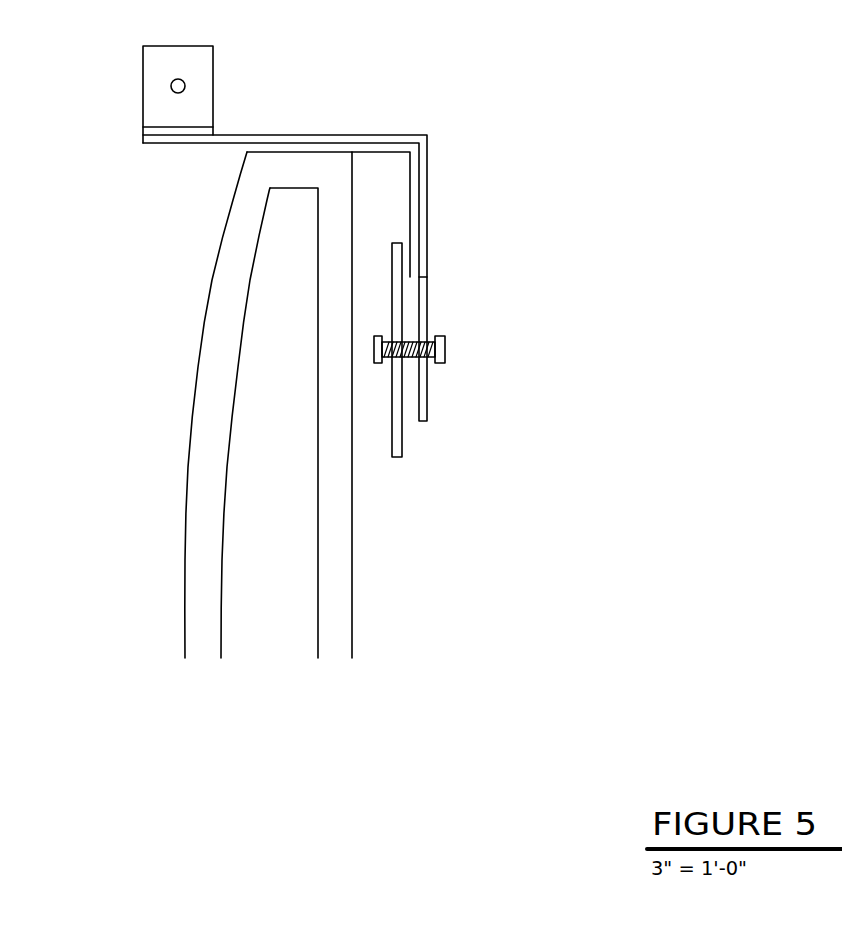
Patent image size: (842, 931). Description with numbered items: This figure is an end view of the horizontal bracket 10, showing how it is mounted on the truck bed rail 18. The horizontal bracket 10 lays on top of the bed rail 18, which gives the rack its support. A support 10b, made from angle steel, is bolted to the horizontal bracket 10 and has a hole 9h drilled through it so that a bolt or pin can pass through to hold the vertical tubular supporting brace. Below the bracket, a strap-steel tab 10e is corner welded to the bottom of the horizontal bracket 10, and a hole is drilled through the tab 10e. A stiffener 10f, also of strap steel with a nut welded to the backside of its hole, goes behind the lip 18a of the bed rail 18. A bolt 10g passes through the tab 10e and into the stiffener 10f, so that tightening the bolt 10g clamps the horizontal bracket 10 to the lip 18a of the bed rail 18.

The holes 9h is at (113, 63).
The horizontal bracket 10 is at (330, 206).
The support 10b is at (224, 91).
The tab 10e is at (474, 351).
The stiffener 10f is at (446, 364).
The bolt 10g is at (454, 340).
The bed rail 18 is at (217, 405).
The lip of bed rail 18a is at (395, 173).